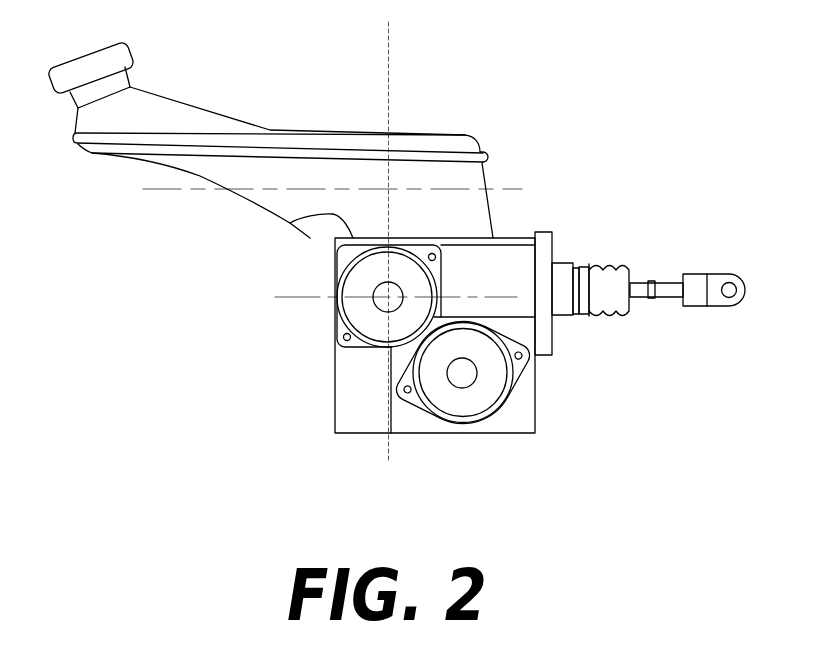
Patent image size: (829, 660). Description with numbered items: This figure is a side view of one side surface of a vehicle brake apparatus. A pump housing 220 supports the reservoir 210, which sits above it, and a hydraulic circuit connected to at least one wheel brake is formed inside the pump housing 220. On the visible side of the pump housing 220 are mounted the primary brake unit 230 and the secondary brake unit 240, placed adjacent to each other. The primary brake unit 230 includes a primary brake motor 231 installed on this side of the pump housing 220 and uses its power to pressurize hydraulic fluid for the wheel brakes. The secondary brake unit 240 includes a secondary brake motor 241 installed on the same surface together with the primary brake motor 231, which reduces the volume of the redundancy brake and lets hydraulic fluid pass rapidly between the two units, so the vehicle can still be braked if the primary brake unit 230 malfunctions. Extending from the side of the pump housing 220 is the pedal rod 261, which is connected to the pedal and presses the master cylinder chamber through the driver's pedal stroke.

The reservoir 210 is at (184, 106).
The pump housing 220 is at (337, 405).
The primary brake unit 230 is at (535, 415).
The primary brake motor 231 is at (467, 416).
The secondary brake unit 240 is at (337, 266).
The secondary brake motor 241 is at (337, 302).
The pedal rod 261 is at (638, 283).